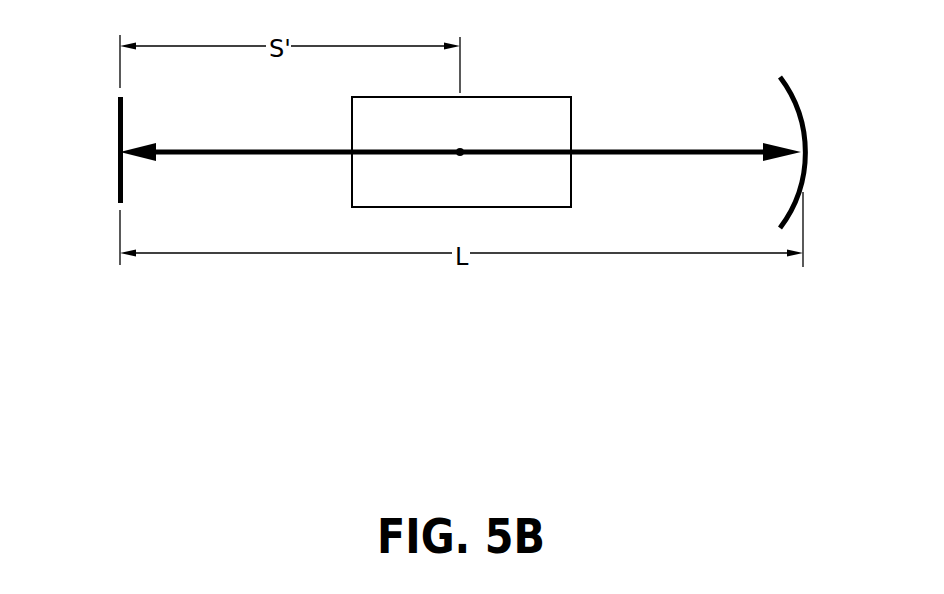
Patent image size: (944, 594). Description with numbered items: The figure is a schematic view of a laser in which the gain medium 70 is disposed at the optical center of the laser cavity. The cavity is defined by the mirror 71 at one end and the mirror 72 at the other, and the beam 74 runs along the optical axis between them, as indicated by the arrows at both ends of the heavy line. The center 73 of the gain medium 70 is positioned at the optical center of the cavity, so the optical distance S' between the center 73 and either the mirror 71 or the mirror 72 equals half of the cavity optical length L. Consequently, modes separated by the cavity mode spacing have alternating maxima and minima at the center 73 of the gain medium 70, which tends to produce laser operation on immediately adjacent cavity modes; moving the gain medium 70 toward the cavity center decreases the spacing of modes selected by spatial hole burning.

The gain medium 70 is at (571, 193).
The mirror 71 is at (118, 162).
The mirror 72 is at (805, 173).
The center of the gain medium 73 is at (466, 143).
The laser beam / optical axis 74 is at (622, 150).